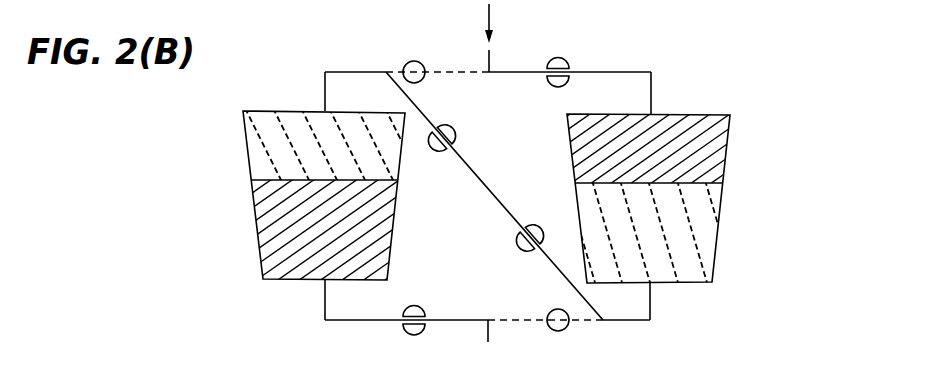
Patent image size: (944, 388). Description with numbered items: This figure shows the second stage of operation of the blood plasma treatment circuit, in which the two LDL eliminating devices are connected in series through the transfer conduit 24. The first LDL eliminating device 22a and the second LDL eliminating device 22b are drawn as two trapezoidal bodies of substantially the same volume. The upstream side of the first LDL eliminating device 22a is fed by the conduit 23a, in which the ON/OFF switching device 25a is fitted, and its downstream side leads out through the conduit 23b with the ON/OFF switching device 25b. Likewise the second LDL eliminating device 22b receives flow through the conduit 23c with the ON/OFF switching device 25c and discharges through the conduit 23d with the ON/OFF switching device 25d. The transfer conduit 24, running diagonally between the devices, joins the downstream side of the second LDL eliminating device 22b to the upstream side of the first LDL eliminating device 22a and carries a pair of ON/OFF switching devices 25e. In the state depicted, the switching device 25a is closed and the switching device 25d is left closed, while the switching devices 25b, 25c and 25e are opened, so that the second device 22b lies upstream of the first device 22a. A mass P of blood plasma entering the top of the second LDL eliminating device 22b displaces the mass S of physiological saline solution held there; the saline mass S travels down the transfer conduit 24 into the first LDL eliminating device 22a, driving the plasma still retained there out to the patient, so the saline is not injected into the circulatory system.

The first LDL eliminating device 22a is at (262, 219).
The second LDL eliminating device 22b is at (720, 213).
The conduit 23a is at (386, 71).
The conduit 23b is at (341, 320).
The conduit 23c is at (579, 72).
The conduit 23d is at (627, 321).
The transfer conduit 24 is at (497, 198).
The ON/OFF switching device 25a is at (414, 61).
The ON/OFF switching device 25b is at (414, 336).
The ON/OFF switching device 25c is at (553, 59).
The ON/OFF switching device 25d is at (559, 331).
The ON/OFF switching devices 25e is at (523, 247).
The mass of physiological saline solution S is at (253, 141).
The mass of blood plasma P is at (713, 165).